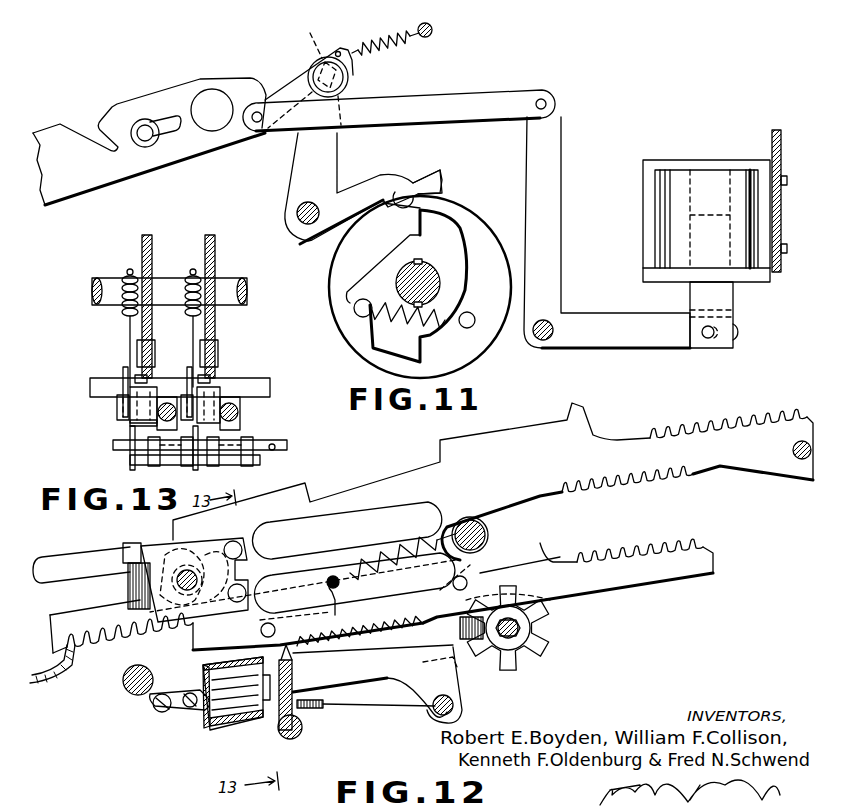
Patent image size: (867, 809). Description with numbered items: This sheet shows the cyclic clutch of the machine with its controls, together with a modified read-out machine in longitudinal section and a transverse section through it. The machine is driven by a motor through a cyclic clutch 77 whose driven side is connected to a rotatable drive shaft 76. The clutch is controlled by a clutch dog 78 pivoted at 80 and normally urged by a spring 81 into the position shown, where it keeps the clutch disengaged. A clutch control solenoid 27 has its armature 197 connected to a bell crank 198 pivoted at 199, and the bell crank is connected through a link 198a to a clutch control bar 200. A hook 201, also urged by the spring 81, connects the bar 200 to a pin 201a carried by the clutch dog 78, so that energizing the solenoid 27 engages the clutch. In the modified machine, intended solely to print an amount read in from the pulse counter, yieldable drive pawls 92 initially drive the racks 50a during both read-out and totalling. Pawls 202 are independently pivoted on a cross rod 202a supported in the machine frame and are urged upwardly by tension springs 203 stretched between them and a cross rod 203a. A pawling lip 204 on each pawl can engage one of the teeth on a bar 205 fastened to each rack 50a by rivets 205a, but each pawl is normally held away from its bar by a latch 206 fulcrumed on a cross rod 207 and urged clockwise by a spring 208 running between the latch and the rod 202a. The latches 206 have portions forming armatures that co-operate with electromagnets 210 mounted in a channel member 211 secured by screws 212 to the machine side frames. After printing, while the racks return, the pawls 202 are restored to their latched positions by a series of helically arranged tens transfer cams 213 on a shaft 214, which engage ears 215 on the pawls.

In FIG. 11, the clutch control bar 200 is at (147, 100).
In FIG. 11, the hook 201 is at (290, 78).
In FIG. 11, the pin 201a is at (304, 72).
In FIG. 11, the spring 81 is at (404, 34).
In FIG. 11, the link 198a is at (459, 100).
In FIG. 11, the clutch dog 78 is at (327, 172).
In FIG. 11, the cyclic clutch 77 is at (457, 182).
In FIG. 11, the pivot 80 is at (297, 211).
In FIG. 11, the drive shaft 76 is at (429, 270).
In FIG. 11, the clutch control solenoid 27 is at (725, 170).
In FIG. 11, the bell crank 198 is at (605, 318).
In FIG. 11, the armature 197 is at (720, 297).
In FIG. 11, the pivot 199 is at (533, 340).
In FIG. 13, the tension springs 203 is at (200, 275).
In FIG. 12, the tension springs 203 is at (375, 572).
In FIG. 13, the cross rod 203a is at (232, 278).
In FIG. 12, the cross rod 203a is at (488, 533).
In FIG. 13, the bar 205 is at (130, 350).
In FIG. 12, the bar 205 is at (367, 652).
In FIG. 12, the rivets 205a is at (468, 580).
In FIG. 13, the tens transfer cams 213 is at (187, 357).
In FIG. 12, the tens transfer cams 213 is at (550, 628).
In FIG. 13, the shaft 214 is at (263, 387).
In FIG. 12, the shaft 214 is at (520, 628).
In FIG. 13, the ears 215 is at (187, 383).
In FIG. 12, the ears 215 is at (427, 665).
In FIG. 13, the pawling lip 204 is at (207, 387).
In FIG. 12, the pawling lip 204 is at (281, 655).
In FIG. 13, the latch 206 is at (157, 430).
In FIG. 12, the latch 206 is at (279, 725).
In FIG. 13, the electromagnets 210 is at (247, 410).
In FIG. 12, the electromagnets 210 is at (246, 693).
In FIG. 13, the channel member 211 is at (130, 417).
In FIG. 12, the channel member 211 is at (203, 665).
In FIG. 12, the screws 212 is at (160, 708).
In FIG. 13, the pawls 202 is at (280, 447).
In FIG. 12, the pawls 202 is at (387, 680).
In FIG. 12, the cross rod 202a is at (462, 712).
In FIG. 13, the cross rod 207 is at (270, 463).
In FIG. 12, the cross rod 207 is at (300, 733).
In FIG. 12, the spring 208 is at (312, 710).
In FIG. 12, the racks 50a is at (392, 480).
In FIG. 12, the yieldable drive pawls 92 is at (247, 567).